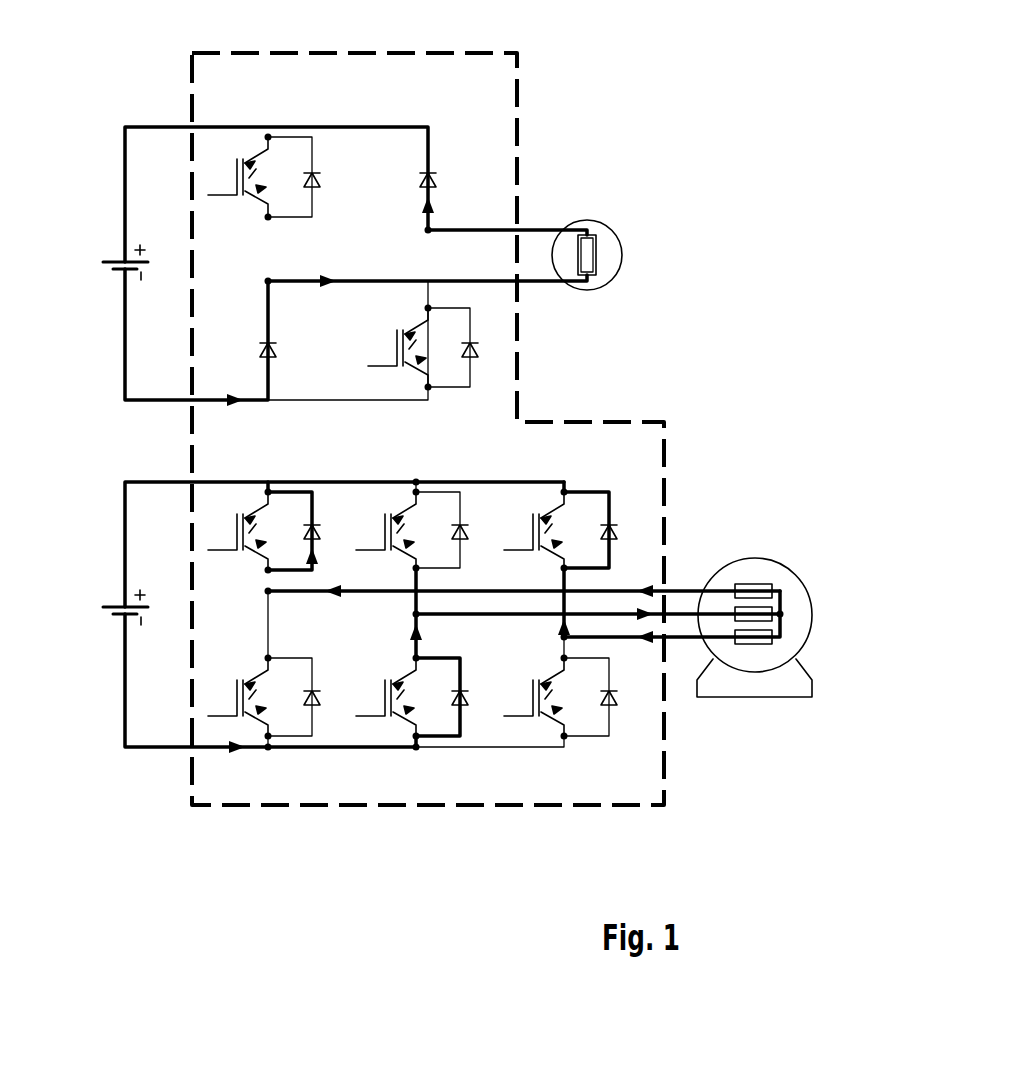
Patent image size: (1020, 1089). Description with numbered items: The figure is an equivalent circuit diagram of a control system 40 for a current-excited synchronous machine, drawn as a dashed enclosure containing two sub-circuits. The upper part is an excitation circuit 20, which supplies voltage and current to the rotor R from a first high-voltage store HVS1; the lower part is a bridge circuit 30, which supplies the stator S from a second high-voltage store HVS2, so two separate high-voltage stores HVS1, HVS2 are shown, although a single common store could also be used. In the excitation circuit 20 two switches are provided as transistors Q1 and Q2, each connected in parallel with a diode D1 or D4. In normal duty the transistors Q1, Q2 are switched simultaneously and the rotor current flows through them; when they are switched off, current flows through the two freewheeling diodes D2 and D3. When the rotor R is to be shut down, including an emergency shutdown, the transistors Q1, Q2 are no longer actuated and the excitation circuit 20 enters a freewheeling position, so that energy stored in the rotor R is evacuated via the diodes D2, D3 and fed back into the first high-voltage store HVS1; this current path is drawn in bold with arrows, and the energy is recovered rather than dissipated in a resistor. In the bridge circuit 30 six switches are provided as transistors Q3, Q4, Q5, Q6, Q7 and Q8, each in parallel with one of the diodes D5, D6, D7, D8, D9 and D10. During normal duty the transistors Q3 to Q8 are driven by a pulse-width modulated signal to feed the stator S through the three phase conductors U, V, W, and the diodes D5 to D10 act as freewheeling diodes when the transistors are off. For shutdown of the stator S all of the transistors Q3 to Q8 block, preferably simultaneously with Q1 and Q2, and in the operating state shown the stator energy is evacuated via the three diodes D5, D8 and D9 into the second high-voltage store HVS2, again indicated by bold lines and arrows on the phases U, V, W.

The excitation circuit 20 is at (137, 127).
The bridge circuit 30 is at (152, 482).
The control system 40 is at (497, 53).
The first high-voltage store HVS1 is at (95, 262).
The second high-voltage store HVS2 is at (95, 608).
The rotor R is at (598, 227).
The stator S is at (795, 572).
The transistor Q1 is at (236, 176).
The transistor Q2 is at (397, 347).
The transistor Q3 is at (238, 528).
The transistor Q4 is at (238, 668).
The transistor Q5 is at (384, 526).
The transistor Q6 is at (384, 697).
The transistor Q7 is at (536, 559).
The transistor Q8 is at (492, 691).
The diode D1 is at (311, 177).
The freewheeling diode D2 is at (444, 178).
The freewheeling diode D3 is at (282, 349).
The diode D4 is at (469, 347).
The freewheeling diode D5 is at (294, 531).
The freewheeling diode D6 is at (294, 697).
The freewheeling diode D7 is at (442, 530).
The freewheeling diode D8 is at (445, 699).
The freewheeling diode D9 is at (606, 530).
The freewheeling diode D10 is at (612, 697).
The phase conductor U is at (524, 581).
The phase conductor V is at (598, 604).
The phase conductor W is at (674, 617).